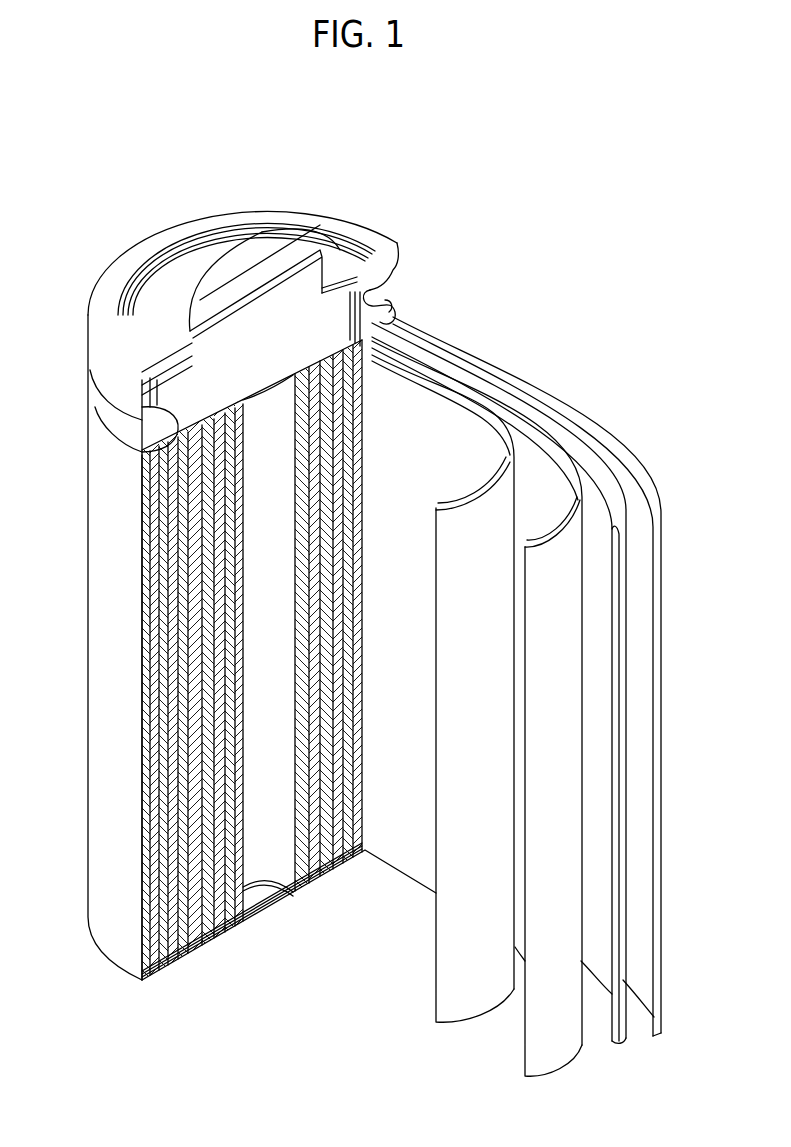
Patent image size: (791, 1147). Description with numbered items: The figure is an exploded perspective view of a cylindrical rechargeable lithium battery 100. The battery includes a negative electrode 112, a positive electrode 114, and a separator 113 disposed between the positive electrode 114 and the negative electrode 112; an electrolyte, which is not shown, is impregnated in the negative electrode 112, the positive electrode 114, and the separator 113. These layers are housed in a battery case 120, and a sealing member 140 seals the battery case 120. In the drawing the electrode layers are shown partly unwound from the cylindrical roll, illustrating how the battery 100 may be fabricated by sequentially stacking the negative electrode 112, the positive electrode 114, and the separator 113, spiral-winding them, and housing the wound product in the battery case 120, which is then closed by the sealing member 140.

The rechargeable lithium battery 100 is at (432, 192).
The negative electrode 112 is at (655, 498).
The separator 113 is at (463, 397).
The positive electrode 114 is at (527, 437).
The battery case 120 is at (107, 552).
The sealing member 140 is at (210, 270).